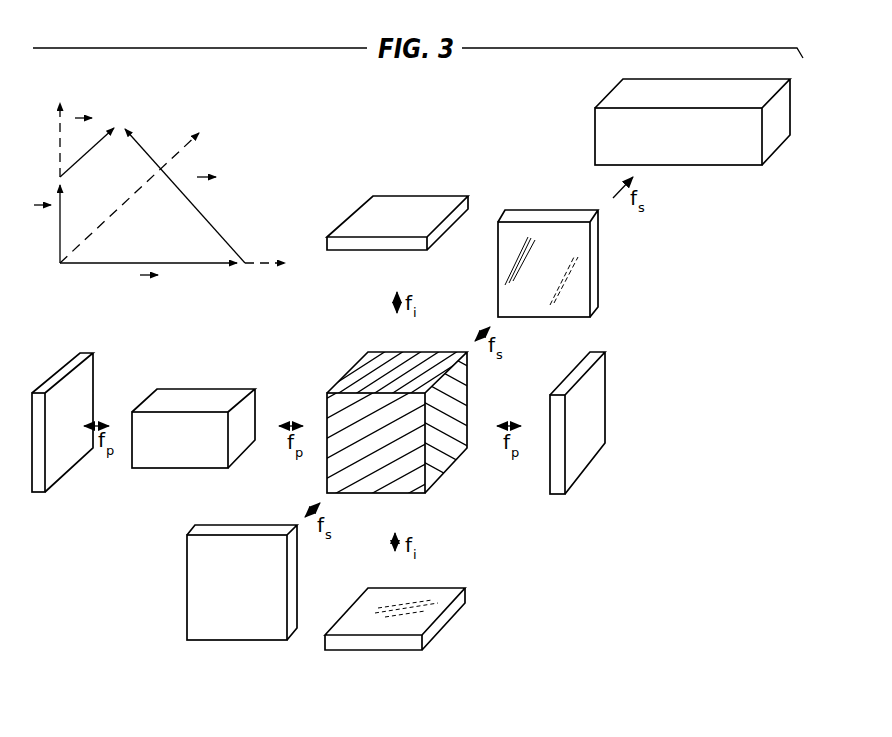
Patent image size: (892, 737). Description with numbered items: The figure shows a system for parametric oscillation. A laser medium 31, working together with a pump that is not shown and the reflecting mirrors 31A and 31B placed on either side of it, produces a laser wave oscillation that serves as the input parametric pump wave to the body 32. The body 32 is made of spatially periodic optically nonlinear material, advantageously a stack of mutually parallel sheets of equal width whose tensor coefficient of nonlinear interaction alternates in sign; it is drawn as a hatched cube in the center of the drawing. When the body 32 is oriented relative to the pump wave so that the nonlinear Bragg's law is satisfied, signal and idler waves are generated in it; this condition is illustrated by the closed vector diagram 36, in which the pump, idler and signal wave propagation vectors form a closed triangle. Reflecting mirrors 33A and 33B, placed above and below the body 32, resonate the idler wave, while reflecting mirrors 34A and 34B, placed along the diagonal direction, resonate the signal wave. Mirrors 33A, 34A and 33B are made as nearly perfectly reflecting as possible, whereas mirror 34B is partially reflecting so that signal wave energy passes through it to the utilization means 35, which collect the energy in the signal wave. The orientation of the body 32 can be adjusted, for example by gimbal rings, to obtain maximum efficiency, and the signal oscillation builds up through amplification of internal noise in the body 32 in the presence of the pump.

The closed vector diagram 36 is at (141, 91).
The utilization means 35 is at (595, 127).
The reflecting mirror 33B is at (410, 196).
The reflecting mirror 34B is at (599, 266).
The reflecting mirror 31A is at (45, 492).
The laser medium 31 is at (170, 468).
The body 32 is at (432, 480).
The reflecting mirror 31B is at (605, 408).
The reflecting mirror 34A is at (187, 587).
The reflecting mirror 33A is at (447, 622).